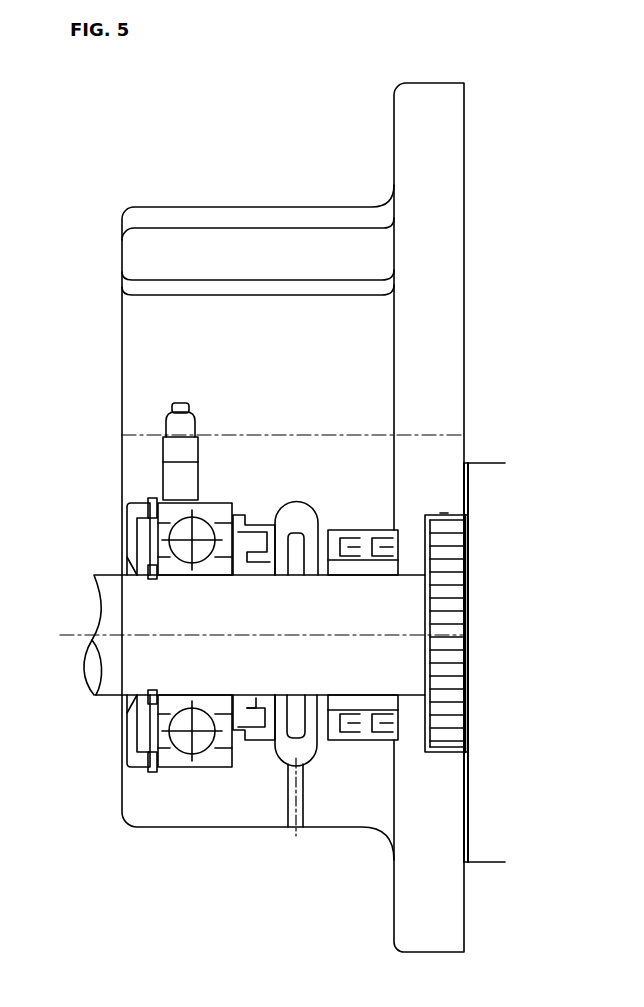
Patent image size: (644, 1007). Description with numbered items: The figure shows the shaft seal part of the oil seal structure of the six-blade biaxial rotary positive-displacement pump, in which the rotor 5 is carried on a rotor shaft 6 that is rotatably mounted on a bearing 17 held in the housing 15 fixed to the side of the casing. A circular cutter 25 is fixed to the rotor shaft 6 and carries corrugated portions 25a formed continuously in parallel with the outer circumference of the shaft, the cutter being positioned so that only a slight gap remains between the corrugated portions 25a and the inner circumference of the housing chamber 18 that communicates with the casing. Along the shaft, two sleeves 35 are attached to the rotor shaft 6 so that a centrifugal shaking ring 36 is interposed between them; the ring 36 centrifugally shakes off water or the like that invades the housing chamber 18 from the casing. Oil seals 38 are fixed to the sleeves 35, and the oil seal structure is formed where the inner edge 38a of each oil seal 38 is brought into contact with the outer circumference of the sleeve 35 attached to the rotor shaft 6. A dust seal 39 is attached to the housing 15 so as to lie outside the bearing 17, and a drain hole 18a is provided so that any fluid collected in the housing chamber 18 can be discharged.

The rotor 5 is at (488, 858).
The rotor shaft 6 is at (408, 605).
The housing 15 is at (400, 110).
The bearing 17 is at (145, 502).
The housing chamber 18 is at (238, 737).
The drain hole 18a is at (300, 807).
The circular cutter 25 is at (462, 542).
The corrugated portions 25a is at (465, 555).
The sleeve 35 is at (260, 535).
The centrifugal shaking ring 36 is at (298, 533).
The oil seal 38 is at (393, 528).
The inner edge 38a is at (255, 713).
The dust seal 39 is at (128, 540).